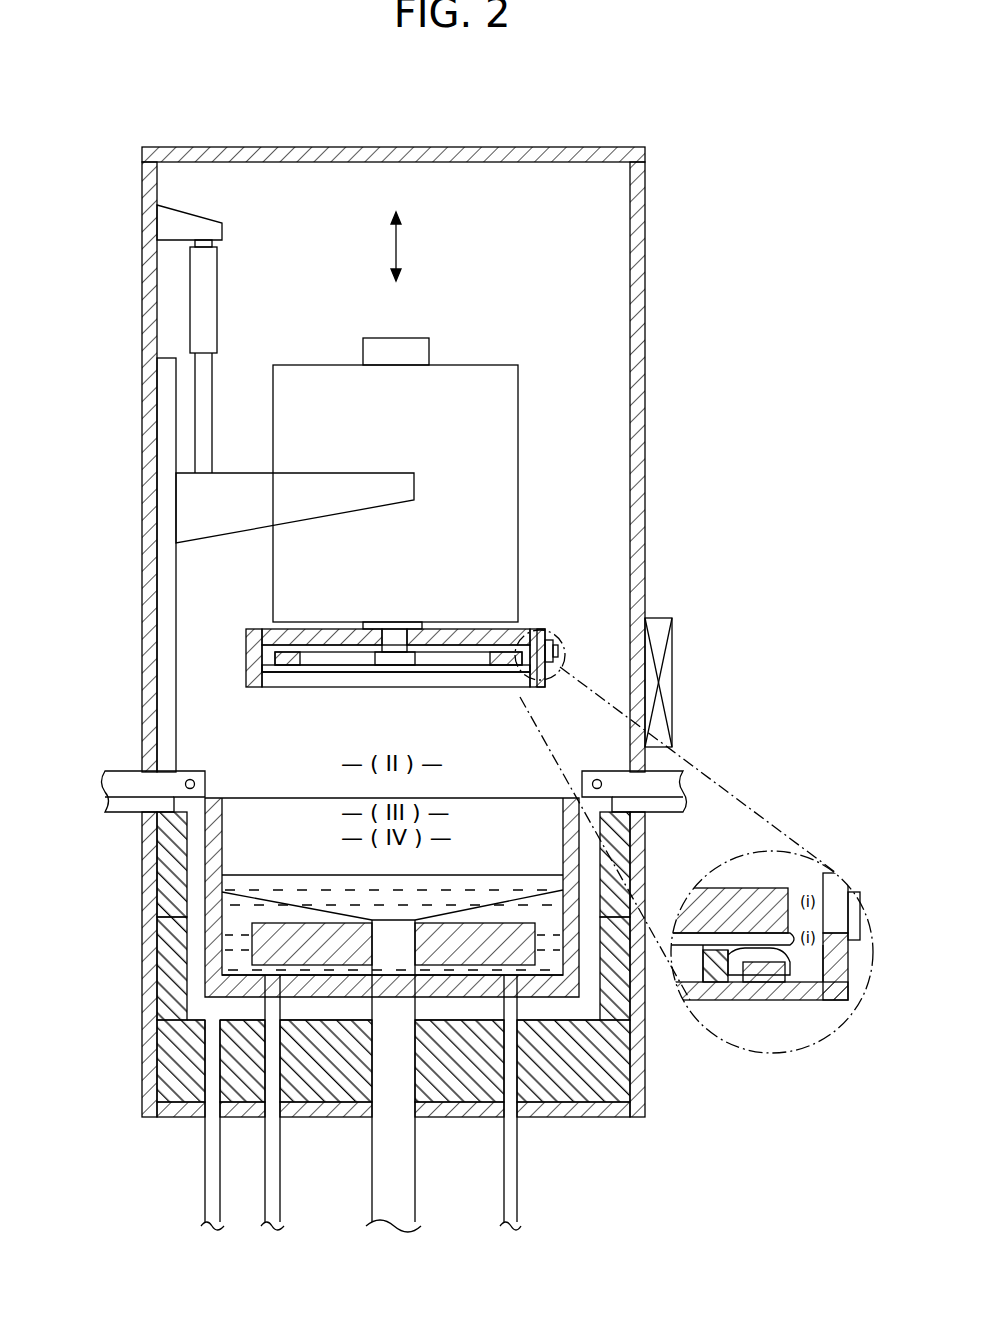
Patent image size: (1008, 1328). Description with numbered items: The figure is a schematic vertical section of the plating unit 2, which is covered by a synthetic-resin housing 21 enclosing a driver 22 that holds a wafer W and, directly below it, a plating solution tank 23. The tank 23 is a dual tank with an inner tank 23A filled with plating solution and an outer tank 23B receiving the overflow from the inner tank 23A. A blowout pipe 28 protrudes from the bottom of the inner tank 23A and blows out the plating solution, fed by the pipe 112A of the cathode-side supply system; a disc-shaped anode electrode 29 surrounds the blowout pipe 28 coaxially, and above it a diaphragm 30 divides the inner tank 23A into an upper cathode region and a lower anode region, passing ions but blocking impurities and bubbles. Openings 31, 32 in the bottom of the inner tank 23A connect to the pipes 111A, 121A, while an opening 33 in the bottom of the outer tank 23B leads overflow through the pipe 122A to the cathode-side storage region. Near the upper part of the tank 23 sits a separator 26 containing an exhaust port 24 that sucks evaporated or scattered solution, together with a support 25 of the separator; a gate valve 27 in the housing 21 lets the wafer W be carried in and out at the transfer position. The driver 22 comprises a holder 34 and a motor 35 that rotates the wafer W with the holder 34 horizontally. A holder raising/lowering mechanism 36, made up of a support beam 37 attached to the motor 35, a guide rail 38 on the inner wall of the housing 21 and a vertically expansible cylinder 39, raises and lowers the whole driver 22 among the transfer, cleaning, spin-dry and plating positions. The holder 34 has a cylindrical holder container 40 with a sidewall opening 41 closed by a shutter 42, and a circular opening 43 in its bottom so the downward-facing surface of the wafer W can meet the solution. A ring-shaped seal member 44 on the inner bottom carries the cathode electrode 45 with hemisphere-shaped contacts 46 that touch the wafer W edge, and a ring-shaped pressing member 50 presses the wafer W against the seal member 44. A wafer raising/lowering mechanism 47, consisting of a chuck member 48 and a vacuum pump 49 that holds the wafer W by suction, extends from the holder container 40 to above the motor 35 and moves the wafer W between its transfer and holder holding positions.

The plating unit 2 is at (481, 147).
The housing 21 is at (640, 285).
The driver 22 is at (478, 365).
The plating solution tank 23 is at (70, 867).
The inner tank 23A is at (172, 910).
The outer tank 23B is at (172, 878).
The exhaust port 24 is at (212, 798).
The support bracket 25 is at (200, 771).
The separator 26 is at (263, 752).
The gate valve 27 is at (673, 645).
The blowout pipe 28 is at (400, 928).
The anode electrode 29 is at (255, 948).
The diaphragm 30 is at (272, 890).
The opening 31 is at (518, 978).
The opening 32 is at (240, 978).
The opening 33 is at (205, 1052).
The holder 34 is at (526, 630).
The motor 35 is at (519, 492).
The holder raising/lowering mechanism 36 is at (222, 323).
The support beam 37 is at (243, 473).
The guide rail 38 is at (178, 592).
The cylinder 39 is at (218, 276).
The holder container 40 is at (246, 650).
The opening 41 is at (546, 636).
The shutter 42 is at (553, 650).
The circular opening 43 is at (322, 686).
The seal member 44 is at (705, 975).
The cathode electrode 45 is at (750, 982).
The contacts 46 is at (780, 978).
The wafer raising/lowering mechanism 47 is at (375, 658).
The chuck member 48 is at (408, 666).
The vacuum pump 49 is at (427, 338).
The pressing member 50 is at (732, 895).
The wafer W is at (470, 673).
The pipe 111A is at (518, 1181).
The pipe 112A is at (415, 1181).
The pipe 121A is at (280, 1181).
The pipe 122A is at (205, 1181).